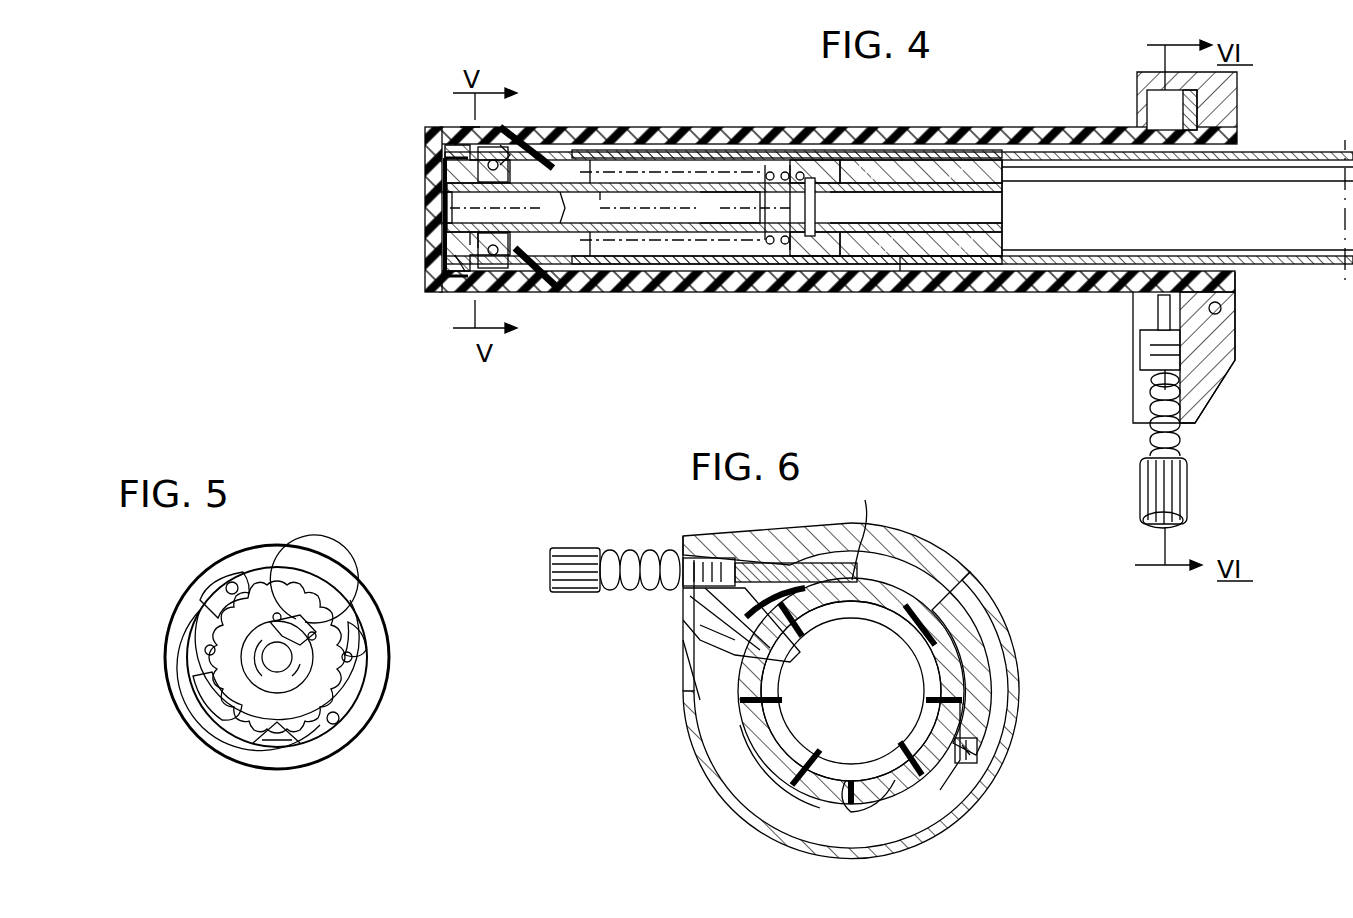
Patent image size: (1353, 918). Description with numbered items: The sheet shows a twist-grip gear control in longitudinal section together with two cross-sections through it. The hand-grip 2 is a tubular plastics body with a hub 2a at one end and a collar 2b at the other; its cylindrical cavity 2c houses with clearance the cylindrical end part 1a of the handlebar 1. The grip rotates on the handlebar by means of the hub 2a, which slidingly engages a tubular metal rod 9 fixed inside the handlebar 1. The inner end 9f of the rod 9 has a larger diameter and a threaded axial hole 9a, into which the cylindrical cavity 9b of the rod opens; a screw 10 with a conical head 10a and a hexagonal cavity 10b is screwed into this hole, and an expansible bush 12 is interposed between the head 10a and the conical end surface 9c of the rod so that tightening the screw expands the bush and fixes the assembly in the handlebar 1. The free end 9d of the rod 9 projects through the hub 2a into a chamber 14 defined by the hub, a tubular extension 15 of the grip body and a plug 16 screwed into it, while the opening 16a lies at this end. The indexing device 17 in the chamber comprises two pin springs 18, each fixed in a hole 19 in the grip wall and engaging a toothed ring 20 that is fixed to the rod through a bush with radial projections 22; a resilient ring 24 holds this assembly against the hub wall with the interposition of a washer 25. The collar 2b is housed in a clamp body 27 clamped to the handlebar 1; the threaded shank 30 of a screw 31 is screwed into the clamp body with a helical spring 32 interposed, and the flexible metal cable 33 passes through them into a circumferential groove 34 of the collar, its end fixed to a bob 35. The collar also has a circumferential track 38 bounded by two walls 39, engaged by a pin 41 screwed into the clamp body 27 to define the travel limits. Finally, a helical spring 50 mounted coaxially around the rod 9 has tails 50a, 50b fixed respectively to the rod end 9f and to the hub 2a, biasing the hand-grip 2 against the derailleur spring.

In FIG. 4, the handlebar 1 is at (1295, 140).
In FIG. 4, the cylindrical end part of the handlebar 1a is at (765, 160).
In FIG. 5, the hand-grip 2 is at (325, 570).
In FIG. 6, the hand-grip 2 is at (760, 800).
In FIG. 4, the hub 2a is at (535, 190).
In FIG. 4, the collar 2b is at (1130, 100).
In FIG. 4, the cylindrical cavity 2c is at (1042, 165).
In FIG. 4, the tubular metal rod 9 is at (645, 280).
In FIG. 5, the tubular metal rod 9 is at (290, 700).
In FIG. 4, the threaded axial hole 9a is at (828, 160).
In FIG. 4, the cylindrical cavity of the tubular rod 9b is at (700, 260).
In FIG. 4, the end surface 9c is at (820, 258).
In FIG. 4, the free end of the tubular rod 9d is at (445, 205).
In FIG. 4, the end of the rod 9f is at (810, 240).
In FIG. 4, the screw 10 is at (926, 160).
In FIG. 4, the conical head 10a is at (1005, 205).
In FIG. 4, the hexagonal cavity 10b is at (855, 212).
In FIG. 4, the expansible bush 12 is at (920, 292).
In FIG. 4, the chamber 14 is at (432, 282).
In FIG. 4, the tubular extension 15 is at (455, 275).
In FIG. 4, the plug 16 is at (445, 165).
In FIG. 4, the end member opening 16a is at (435, 200).
In FIG. 4, the indexing device 17 is at (450, 135).
In FIG. 4, the pin springs 18 is at (490, 150).
In FIG. 5, the pin springs 18 is at (200, 600).
In FIG. 5, the hole 19 is at (230, 585).
In FIG. 4, the toothed ring 20 is at (730, 125).
In FIG. 5, the toothed ring 20 is at (220, 728).
In FIG. 4, the radial projections 22 is at (515, 160).
In FIG. 4, the resilient ring 24 is at (460, 250).
In FIG. 5, the resilient ring 24 is at (315, 645).
In FIG. 4, the washer 25 is at (540, 202).
In FIG. 4, the clamp body 27 is at (1250, 340).
In FIG. 6, the clamp body 27 is at (1035, 710).
In FIG. 4, the threaded shank 30 is at (1182, 442).
In FIG. 6, the threaded shank 30 is at (640, 552).
In FIG. 4, the screw 31 is at (1185, 486).
In FIG. 6, the screw 31 is at (585, 550).
In FIG. 4, the helical spring 32 is at (1185, 402).
In FIG. 6, the helical spring 32 is at (688, 558).
In FIG. 6, the flexible metal cable 33 is at (868, 520).
In FIG. 6, the circumferential groove 34 is at (925, 580).
In FIG. 6, the bob 35 is at (985, 758).
In FIG. 4, the circumferential track 38 is at (1200, 115).
In FIG. 6, the circumferential track 38 is at (785, 835).
In FIG. 6, the end walls 39 is at (755, 655).
In FIG. 4, the pin 41 is at (1150, 312).
In FIG. 6, the pin 41 is at (700, 660).
In FIG. 4, the helical spring 50 is at (645, 150).
In FIG. 4, the tail 50a is at (768, 260).
In FIG. 4, the tail 50b is at (595, 265).